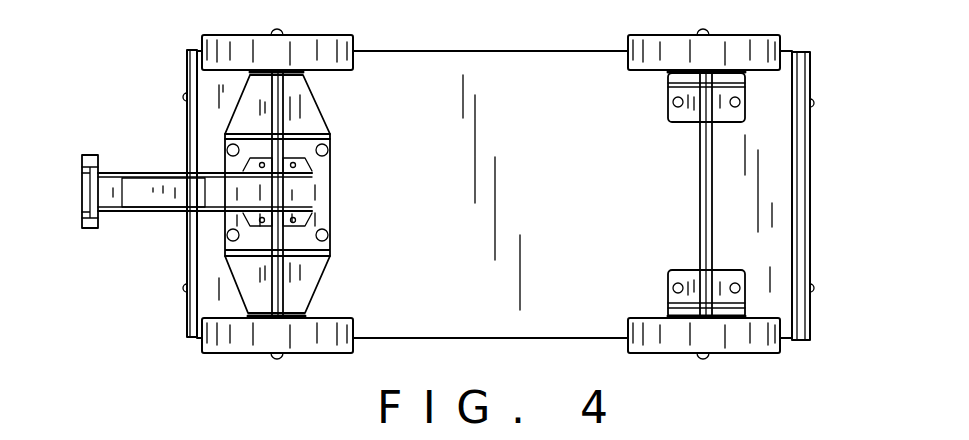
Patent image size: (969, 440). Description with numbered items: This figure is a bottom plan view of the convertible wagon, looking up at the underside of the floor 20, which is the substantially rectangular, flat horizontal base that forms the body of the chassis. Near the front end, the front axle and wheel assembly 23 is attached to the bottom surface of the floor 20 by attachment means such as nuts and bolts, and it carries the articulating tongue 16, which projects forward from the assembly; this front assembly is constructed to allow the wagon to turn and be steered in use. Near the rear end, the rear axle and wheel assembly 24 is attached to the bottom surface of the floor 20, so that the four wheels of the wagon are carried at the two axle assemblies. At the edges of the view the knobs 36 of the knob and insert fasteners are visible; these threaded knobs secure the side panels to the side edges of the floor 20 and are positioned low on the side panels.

The articulating tongue 16 is at (133, 173).
The floor 20 is at (395, 286).
The front axle and wheel assembly 23 is at (318, 107).
The rear axle and wheel assembly 24 is at (745, 107).
The knob 36 is at (217, 439).